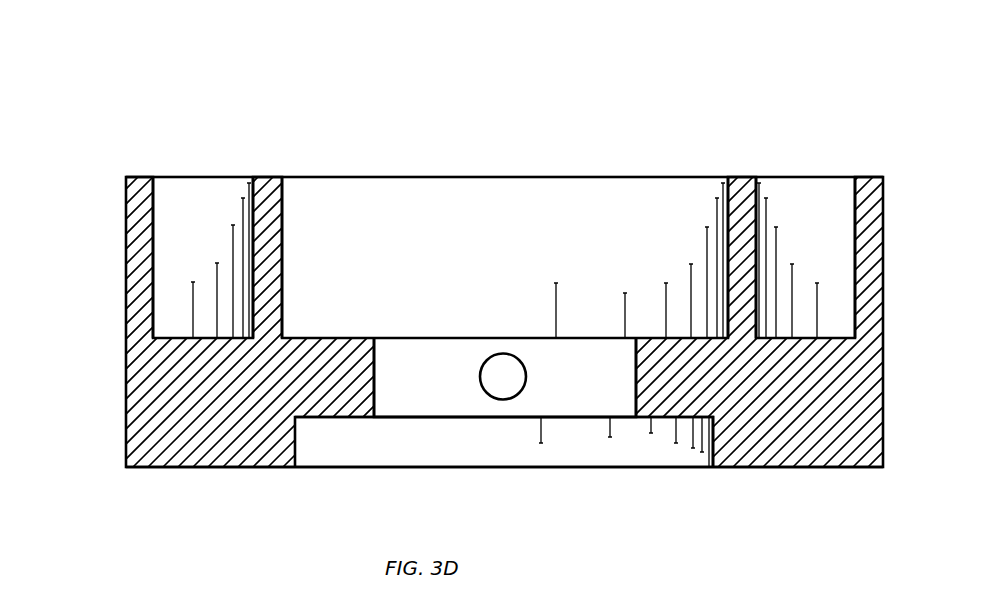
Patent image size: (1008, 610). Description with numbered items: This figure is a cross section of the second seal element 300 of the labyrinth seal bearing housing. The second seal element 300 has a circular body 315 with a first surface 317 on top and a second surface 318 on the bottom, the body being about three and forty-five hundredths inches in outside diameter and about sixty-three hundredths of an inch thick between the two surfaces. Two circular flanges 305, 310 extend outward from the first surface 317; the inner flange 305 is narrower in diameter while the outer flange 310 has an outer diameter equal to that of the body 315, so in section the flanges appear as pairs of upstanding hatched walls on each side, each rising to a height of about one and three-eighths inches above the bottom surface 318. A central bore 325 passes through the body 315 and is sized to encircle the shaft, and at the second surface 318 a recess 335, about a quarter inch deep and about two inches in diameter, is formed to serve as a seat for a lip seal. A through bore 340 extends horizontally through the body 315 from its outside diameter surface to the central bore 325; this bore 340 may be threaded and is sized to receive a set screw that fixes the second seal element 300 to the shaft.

The second seal element 300 is at (244, 74).
The flange 305 is at (271, 177).
The flange 310 is at (135, 177).
The body 315 is at (120, 384).
The first surface 317 is at (190, 338).
The second surface 318 is at (845, 467).
The central bore 325 is at (374, 402).
The recess 335 is at (698, 433).
The through bore 340 is at (502, 353).